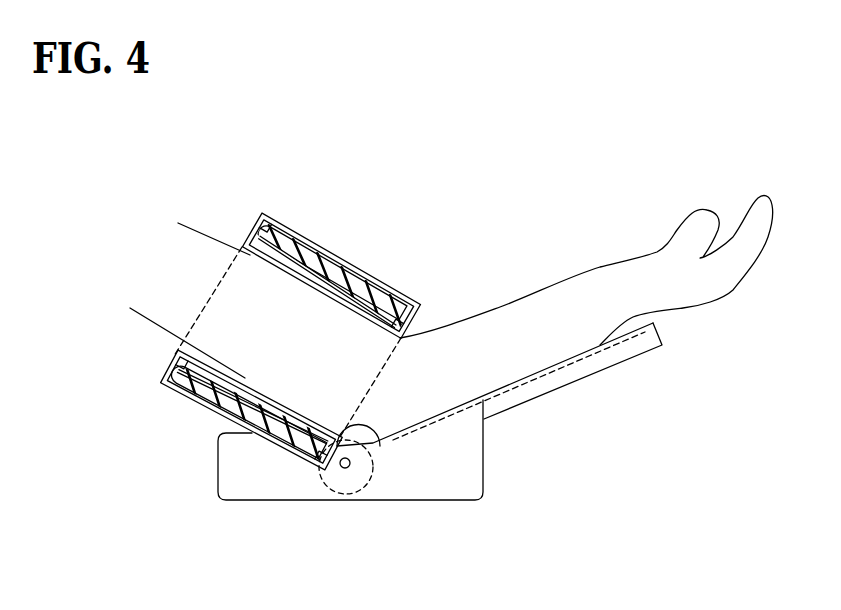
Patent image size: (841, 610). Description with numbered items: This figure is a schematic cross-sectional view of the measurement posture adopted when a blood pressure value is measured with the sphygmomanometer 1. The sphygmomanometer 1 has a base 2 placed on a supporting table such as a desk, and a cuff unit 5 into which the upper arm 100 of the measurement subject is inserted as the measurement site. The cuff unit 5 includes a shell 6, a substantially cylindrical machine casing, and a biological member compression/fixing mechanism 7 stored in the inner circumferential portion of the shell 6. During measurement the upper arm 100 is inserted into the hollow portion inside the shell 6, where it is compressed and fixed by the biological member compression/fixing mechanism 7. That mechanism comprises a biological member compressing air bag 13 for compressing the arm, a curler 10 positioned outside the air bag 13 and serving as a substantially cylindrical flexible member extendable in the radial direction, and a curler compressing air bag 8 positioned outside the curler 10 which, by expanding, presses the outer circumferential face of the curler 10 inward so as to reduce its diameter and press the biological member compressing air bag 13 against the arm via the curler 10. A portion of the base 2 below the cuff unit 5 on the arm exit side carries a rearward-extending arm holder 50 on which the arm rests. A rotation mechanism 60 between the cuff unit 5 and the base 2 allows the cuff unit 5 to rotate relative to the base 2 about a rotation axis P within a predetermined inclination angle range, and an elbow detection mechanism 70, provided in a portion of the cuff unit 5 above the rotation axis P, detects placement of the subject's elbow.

The sphygmomanometer 1 is at (545, 491).
The base 2 is at (422, 480).
The cuff unit 5 is at (328, 249).
The shell 6 is at (296, 238).
The biological member compression/fixing mechanism 7 is at (394, 201).
The curler compressing air bag 8 is at (319, 267).
The curler 10 is at (356, 287).
The biological member compressing air bag 13 is at (388, 300).
The arm holder 50 is at (588, 365).
The rotation mechanism 60 is at (317, 512).
The elbow detection mechanism 70 is at (378, 445).
The rotation axis P is at (344, 470).
The upper arm 100 is at (243, 340).